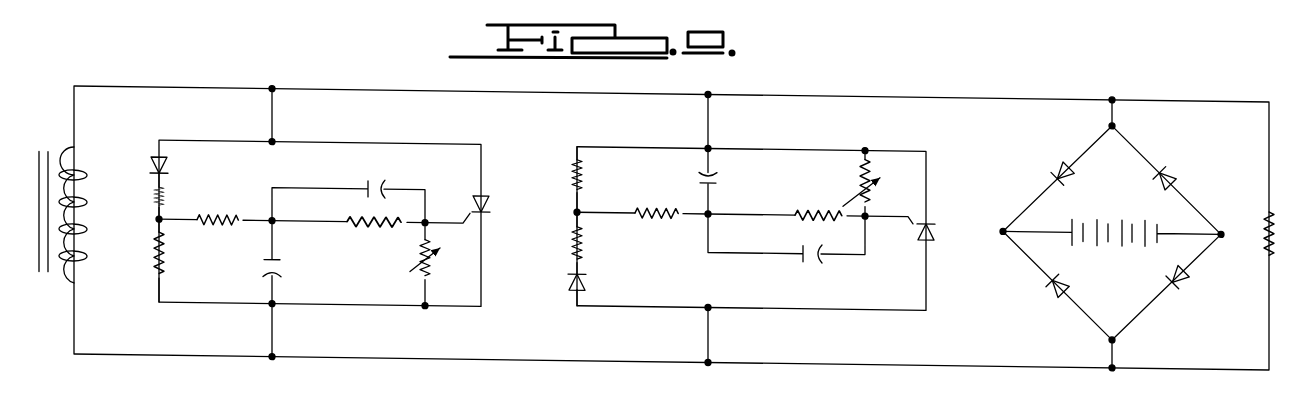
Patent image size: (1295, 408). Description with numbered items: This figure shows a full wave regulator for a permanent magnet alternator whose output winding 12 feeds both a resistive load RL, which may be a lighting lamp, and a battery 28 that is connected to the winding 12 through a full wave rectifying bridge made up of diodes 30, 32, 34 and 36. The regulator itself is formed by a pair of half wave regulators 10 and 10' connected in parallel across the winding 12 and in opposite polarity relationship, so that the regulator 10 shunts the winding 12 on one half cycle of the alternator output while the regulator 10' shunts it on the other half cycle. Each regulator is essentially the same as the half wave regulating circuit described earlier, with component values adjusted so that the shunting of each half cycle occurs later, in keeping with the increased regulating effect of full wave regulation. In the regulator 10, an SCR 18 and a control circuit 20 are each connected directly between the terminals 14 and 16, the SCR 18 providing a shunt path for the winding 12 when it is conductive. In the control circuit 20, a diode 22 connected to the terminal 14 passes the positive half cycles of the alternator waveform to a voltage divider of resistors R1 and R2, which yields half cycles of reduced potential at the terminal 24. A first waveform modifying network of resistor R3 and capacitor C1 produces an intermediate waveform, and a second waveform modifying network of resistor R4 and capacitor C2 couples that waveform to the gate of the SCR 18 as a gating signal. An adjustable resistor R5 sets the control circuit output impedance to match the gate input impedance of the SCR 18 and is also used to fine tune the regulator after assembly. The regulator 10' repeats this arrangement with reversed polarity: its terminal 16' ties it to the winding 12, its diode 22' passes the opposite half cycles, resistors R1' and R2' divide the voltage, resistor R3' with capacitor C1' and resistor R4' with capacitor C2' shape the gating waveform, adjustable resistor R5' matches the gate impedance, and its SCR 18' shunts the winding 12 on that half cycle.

The regulating circuit 10 is at (320, 206).
The windings 12 is at (98, 182).
The terminal 14 is at (275, 139).
The terminal 16 is at (302, 331).
The SCR 18 is at (481, 188).
The control circuit 20 is at (340, 252).
The diode 22 is at (193, 164).
The terminal 24 is at (150, 221).
The resistor R1 is at (176, 196).
The resistor R2 is at (128, 260).
The resistor R3 is at (234, 203).
The resistor R4 is at (374, 249).
The adjustable resistor R5 is at (437, 282).
The capacitor C1 is at (299, 263).
The capacitor C2 is at (351, 190).
The half wave regulator 10' is at (759, 204).
The terminal 16' is at (737, 121).
The SCR 18' is at (921, 216).
The diode 22' is at (613, 287).
The resistor R1' is at (547, 241).
The resistor R2' is at (615, 180).
The resistor R3' is at (642, 231).
The resistor R4' is at (786, 196).
The adjustable resistor R5' is at (878, 183).
The capacitor C1' is at (732, 182).
The capacitor C2' is at (786, 257).
The battery 28 is at (1105, 240).
The diode 30 is at (1062, 156).
The diode 32 is at (1055, 290).
The diode 34 is at (1185, 272).
The diode 36 is at (1170, 168).
The resistive load RL is at (1267, 222).